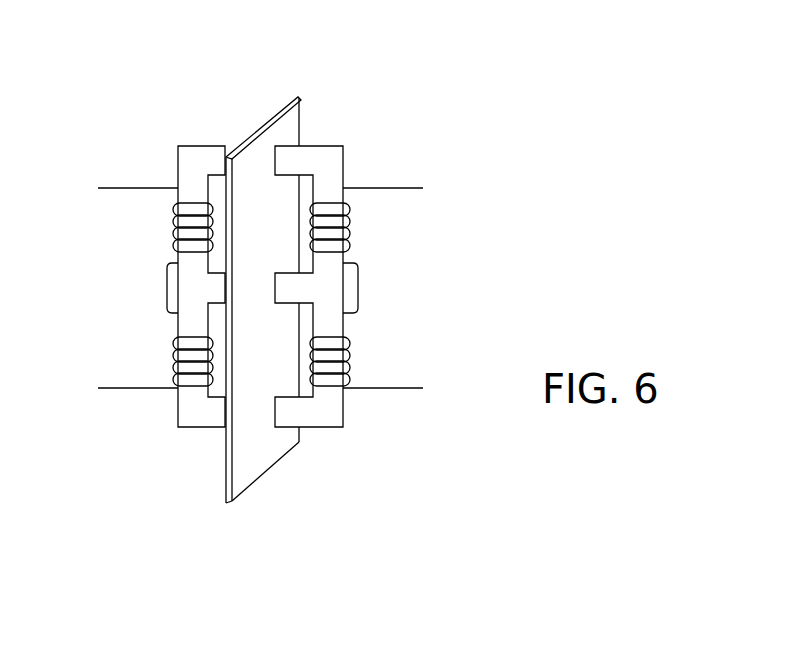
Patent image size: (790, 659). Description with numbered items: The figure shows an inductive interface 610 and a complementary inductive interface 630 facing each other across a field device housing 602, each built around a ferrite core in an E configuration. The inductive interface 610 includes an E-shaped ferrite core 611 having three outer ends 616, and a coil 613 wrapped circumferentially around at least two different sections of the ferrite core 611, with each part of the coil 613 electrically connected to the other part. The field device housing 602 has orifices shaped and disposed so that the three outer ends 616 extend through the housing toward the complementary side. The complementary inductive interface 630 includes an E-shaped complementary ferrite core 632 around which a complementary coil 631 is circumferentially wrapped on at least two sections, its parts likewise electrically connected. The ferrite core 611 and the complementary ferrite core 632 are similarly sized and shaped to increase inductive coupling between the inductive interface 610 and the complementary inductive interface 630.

The field device housing 602 is at (284, 127).
The inductive interface 610 is at (365, 241).
The ferrite core 611 is at (333, 158).
The coil 613 is at (347, 338).
The outer ends 616 is at (273, 158).
The complementary inductive interface 630 is at (136, 222).
The complementary coil 631 is at (177, 217).
The complementary ferrite core 632 is at (207, 150).